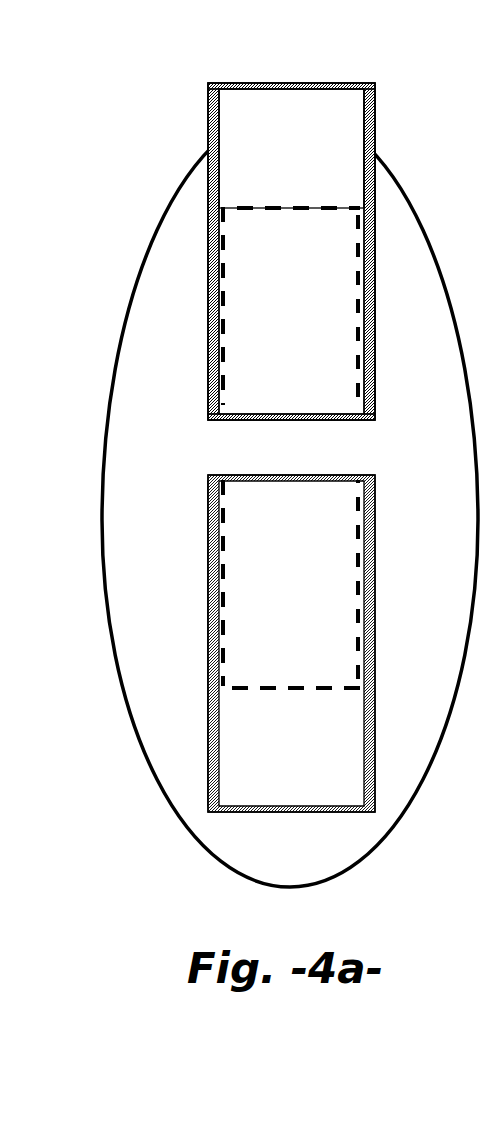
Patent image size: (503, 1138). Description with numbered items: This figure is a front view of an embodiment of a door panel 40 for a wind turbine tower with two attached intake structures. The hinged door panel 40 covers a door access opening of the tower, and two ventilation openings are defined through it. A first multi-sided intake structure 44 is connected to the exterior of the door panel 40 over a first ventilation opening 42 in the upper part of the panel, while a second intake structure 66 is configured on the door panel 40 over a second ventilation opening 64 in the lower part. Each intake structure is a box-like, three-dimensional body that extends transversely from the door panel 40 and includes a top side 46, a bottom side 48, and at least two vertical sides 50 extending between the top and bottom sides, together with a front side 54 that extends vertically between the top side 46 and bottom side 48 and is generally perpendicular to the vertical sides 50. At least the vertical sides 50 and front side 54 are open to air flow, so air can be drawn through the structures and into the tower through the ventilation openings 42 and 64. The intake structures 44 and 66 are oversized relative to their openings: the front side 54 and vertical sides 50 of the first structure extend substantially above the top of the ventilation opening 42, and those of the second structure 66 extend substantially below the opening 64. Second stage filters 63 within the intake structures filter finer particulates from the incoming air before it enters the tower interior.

The door panel 40 is at (132, 465).
The ventilation opening 42 is at (296, 207).
The multi-sided intake structure 44 is at (383, 127).
The top side 46 is at (250, 83).
The bottom side 48 is at (284, 421).
The vertical sides 50 is at (208, 327).
The front side 54 is at (305, 145).
The second stage filters 63 is at (208, 146).
The second ventilation opening 64 is at (300, 690).
The second intake structure 66 is at (383, 491).